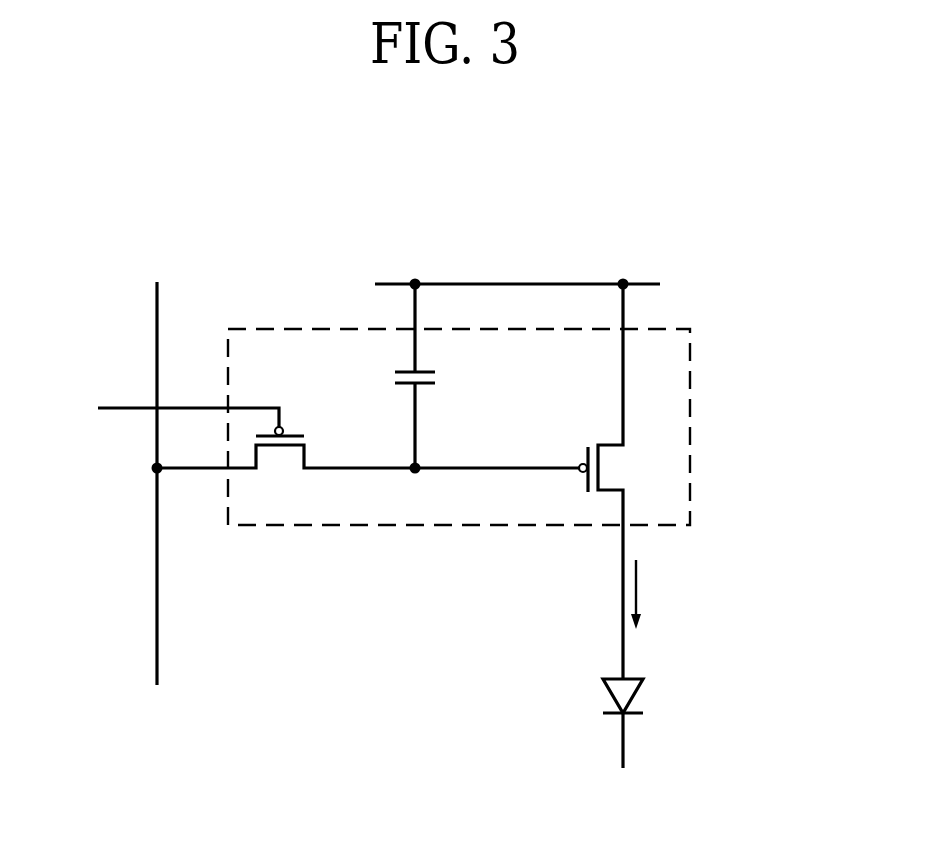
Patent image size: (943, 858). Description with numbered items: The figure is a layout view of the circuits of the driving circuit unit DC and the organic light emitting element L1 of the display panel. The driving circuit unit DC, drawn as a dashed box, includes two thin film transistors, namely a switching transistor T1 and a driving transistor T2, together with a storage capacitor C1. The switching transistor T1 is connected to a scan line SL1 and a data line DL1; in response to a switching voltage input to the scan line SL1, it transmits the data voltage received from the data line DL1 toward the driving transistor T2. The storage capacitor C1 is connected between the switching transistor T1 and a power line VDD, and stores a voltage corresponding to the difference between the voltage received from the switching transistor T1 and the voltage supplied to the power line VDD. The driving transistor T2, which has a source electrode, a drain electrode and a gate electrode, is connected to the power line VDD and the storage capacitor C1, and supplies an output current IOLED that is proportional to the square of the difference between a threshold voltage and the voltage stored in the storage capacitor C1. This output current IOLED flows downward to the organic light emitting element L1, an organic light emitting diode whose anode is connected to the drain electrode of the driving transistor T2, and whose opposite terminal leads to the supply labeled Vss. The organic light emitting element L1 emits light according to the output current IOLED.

The data line DL1 is at (156, 460).
The scan line SL1 is at (161, 410).
The power line VDD is at (517, 261).
The storage capacitor C1 is at (433, 376).
The switching transistor T1 is at (286, 471).
The driving transistor T2 is at (540, 481).
The driving circuit unit DC is at (692, 400).
The output current IOLED is at (665, 594).
The organic light emitting element L1 is at (643, 696).
The ground voltage Vss is at (624, 764).